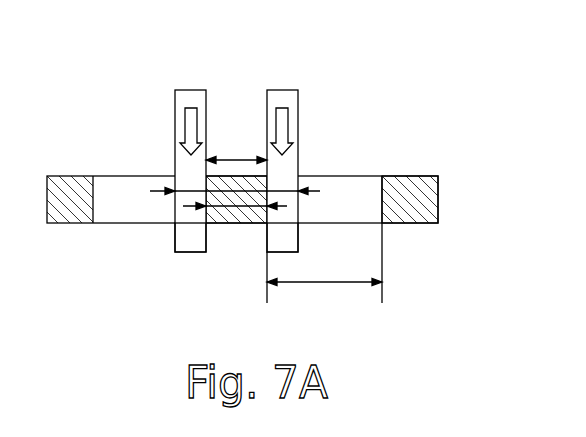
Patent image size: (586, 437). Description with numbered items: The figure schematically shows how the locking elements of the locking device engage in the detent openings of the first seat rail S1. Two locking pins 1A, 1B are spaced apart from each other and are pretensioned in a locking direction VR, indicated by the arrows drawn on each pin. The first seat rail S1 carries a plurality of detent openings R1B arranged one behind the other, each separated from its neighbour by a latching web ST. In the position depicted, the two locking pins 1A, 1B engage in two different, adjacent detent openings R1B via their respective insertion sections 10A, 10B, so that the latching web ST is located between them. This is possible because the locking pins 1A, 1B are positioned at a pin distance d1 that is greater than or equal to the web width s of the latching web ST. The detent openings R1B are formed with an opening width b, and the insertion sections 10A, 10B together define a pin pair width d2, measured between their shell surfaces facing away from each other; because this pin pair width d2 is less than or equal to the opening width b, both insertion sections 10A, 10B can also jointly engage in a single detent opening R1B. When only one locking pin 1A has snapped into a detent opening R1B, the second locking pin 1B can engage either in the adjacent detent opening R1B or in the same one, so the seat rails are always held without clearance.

The first locking pin 1A is at (288, 85).
The second locking pin 1B is at (187, 88).
The locking direction VR is at (190, 123).
The detent opening R1B is at (345, 190).
The first seat rail S1 is at (415, 175).
The latching web ST is at (235, 217).
The insertion section 10A is at (270, 243).
The insertion section 10B is at (188, 240).
The pin distance d1 is at (236, 148).
The pin pair width d2 is at (219, 190).
The web width s is at (236, 218).
The opening width b is at (324, 263).